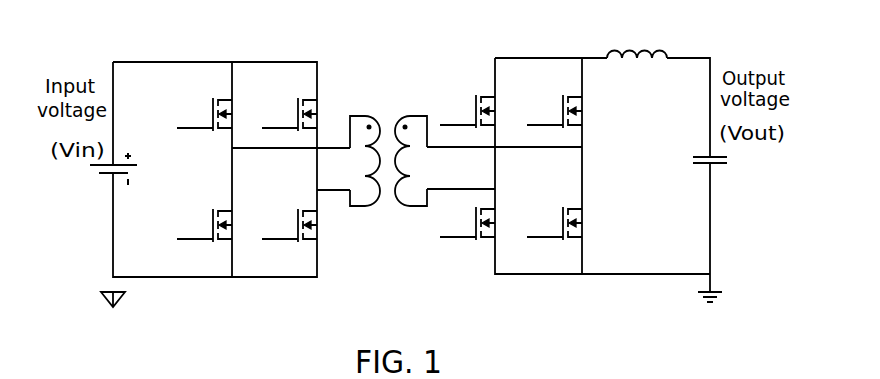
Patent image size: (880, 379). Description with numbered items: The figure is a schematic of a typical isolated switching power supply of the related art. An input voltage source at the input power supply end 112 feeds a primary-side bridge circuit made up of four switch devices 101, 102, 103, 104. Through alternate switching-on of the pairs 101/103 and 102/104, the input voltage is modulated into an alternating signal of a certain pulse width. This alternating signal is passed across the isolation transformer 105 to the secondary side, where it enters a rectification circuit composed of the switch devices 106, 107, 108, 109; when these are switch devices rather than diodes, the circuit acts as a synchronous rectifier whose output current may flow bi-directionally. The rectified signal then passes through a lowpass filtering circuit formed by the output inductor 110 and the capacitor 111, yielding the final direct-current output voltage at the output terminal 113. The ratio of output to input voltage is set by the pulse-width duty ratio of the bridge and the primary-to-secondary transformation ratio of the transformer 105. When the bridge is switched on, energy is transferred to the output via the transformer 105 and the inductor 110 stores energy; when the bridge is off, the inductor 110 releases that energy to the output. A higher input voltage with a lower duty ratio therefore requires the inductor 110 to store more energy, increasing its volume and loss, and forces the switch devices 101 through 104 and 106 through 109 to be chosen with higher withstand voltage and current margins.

The bridge circuit switch device 101 is at (204, 107).
The bridge circuit switch device 102 is at (204, 218).
The bridge circuit switch device 103 is at (289, 218).
The bridge circuit switch device 104 is at (289, 107).
The transformer 105 is at (388, 183).
The switch device 106 is at (467, 106).
The switch device 107 is at (467, 235).
The switch device 108 is at (554, 235).
The switch device 109 is at (552, 106).
The output inductor 110 is at (637, 74).
The capacitor 111 is at (689, 170).
The input power supply end 112 is at (112, 109).
The output terminal 113 is at (701, 162).